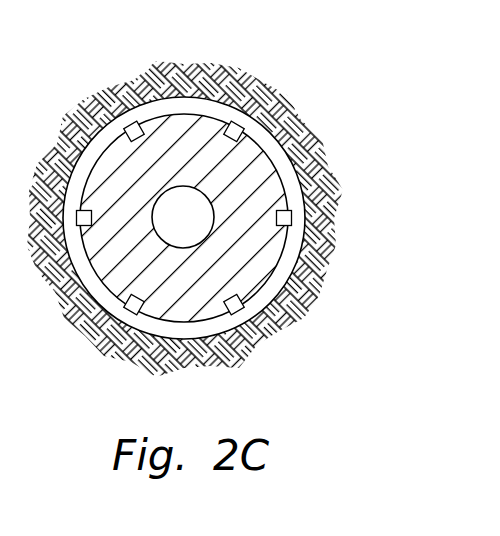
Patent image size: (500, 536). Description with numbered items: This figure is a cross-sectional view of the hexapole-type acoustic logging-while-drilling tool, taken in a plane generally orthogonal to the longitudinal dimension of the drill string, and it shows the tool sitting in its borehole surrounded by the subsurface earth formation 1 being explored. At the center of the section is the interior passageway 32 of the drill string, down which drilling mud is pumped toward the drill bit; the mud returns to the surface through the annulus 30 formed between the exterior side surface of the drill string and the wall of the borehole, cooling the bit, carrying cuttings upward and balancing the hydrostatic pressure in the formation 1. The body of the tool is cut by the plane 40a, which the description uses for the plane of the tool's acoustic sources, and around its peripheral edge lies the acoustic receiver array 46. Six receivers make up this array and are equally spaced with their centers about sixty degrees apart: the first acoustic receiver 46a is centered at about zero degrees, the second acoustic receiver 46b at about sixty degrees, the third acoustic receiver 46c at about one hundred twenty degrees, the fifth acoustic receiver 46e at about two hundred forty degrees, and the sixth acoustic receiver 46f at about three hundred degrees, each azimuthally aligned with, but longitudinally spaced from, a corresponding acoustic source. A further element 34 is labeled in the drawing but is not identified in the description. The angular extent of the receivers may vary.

The subsurface earth formation 1 is at (62, 127).
The annulus 30 is at (268, 143).
The interior passageway 32 is at (170, 226).
The conductor 34 is at (80, 222).
The plane 40a is at (183, 133).
The acoustic receiver array 46 is at (201, 219).
The first acoustic receiver 46a is at (284, 214).
The second acoustic receiver 46b is at (233, 127).
The third acoustic receiver 46c is at (128, 126).
The fifth acoustic receiver 46e is at (130, 306).
The sixth acoustic receiver 46f is at (237, 308).